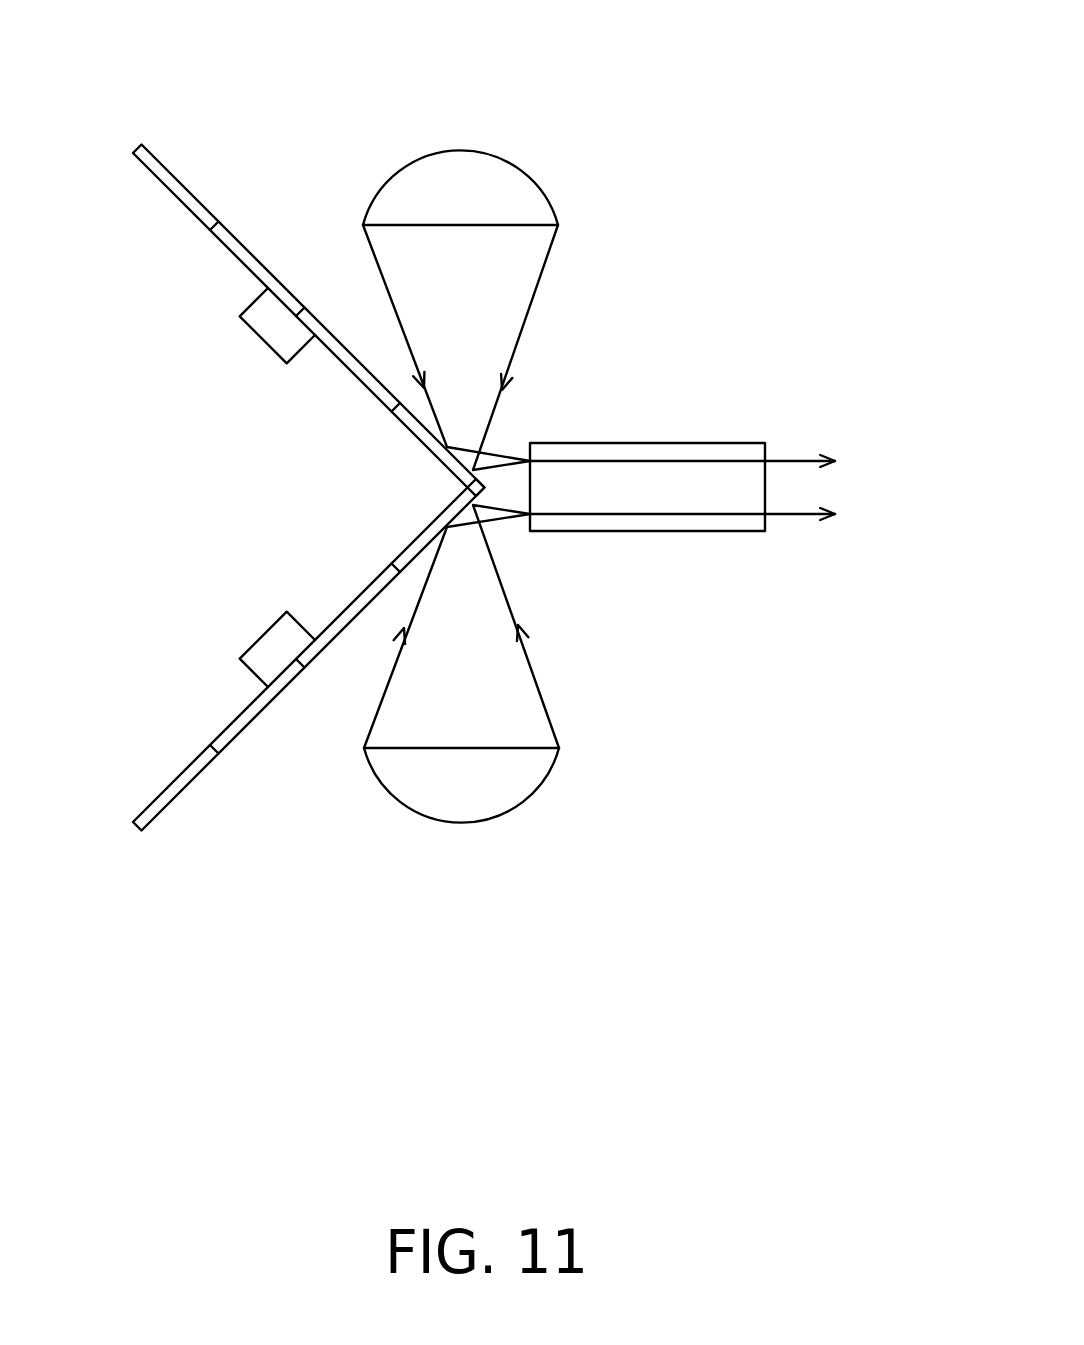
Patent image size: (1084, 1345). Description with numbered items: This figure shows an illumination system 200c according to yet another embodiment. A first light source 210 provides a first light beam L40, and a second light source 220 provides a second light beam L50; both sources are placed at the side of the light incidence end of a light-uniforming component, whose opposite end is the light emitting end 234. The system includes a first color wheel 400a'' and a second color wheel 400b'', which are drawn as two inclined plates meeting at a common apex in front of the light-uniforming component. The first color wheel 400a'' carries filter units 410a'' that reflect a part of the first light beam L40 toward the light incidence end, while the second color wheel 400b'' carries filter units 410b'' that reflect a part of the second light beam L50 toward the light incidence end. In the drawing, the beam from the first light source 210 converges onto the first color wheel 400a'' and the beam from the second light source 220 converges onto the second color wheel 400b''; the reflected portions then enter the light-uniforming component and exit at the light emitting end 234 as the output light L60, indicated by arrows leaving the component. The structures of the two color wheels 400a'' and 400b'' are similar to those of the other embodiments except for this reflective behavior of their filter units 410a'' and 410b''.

The second color wheel 400b'' is at (309, 253).
The filter units 410b'' is at (259, 231).
The first color wheel 400a'' is at (309, 724).
The filter units 410a'' is at (258, 746).
The second light source 220 is at (478, 162).
The first light source 210 is at (478, 809).
The light emitting end 234 is at (770, 444).
The second light beam L50 is at (390, 255).
The first light beam L40 is at (393, 717).
The combined output light beam L60 is at (790, 517).
The illumination system 200c is at (915, 1022).